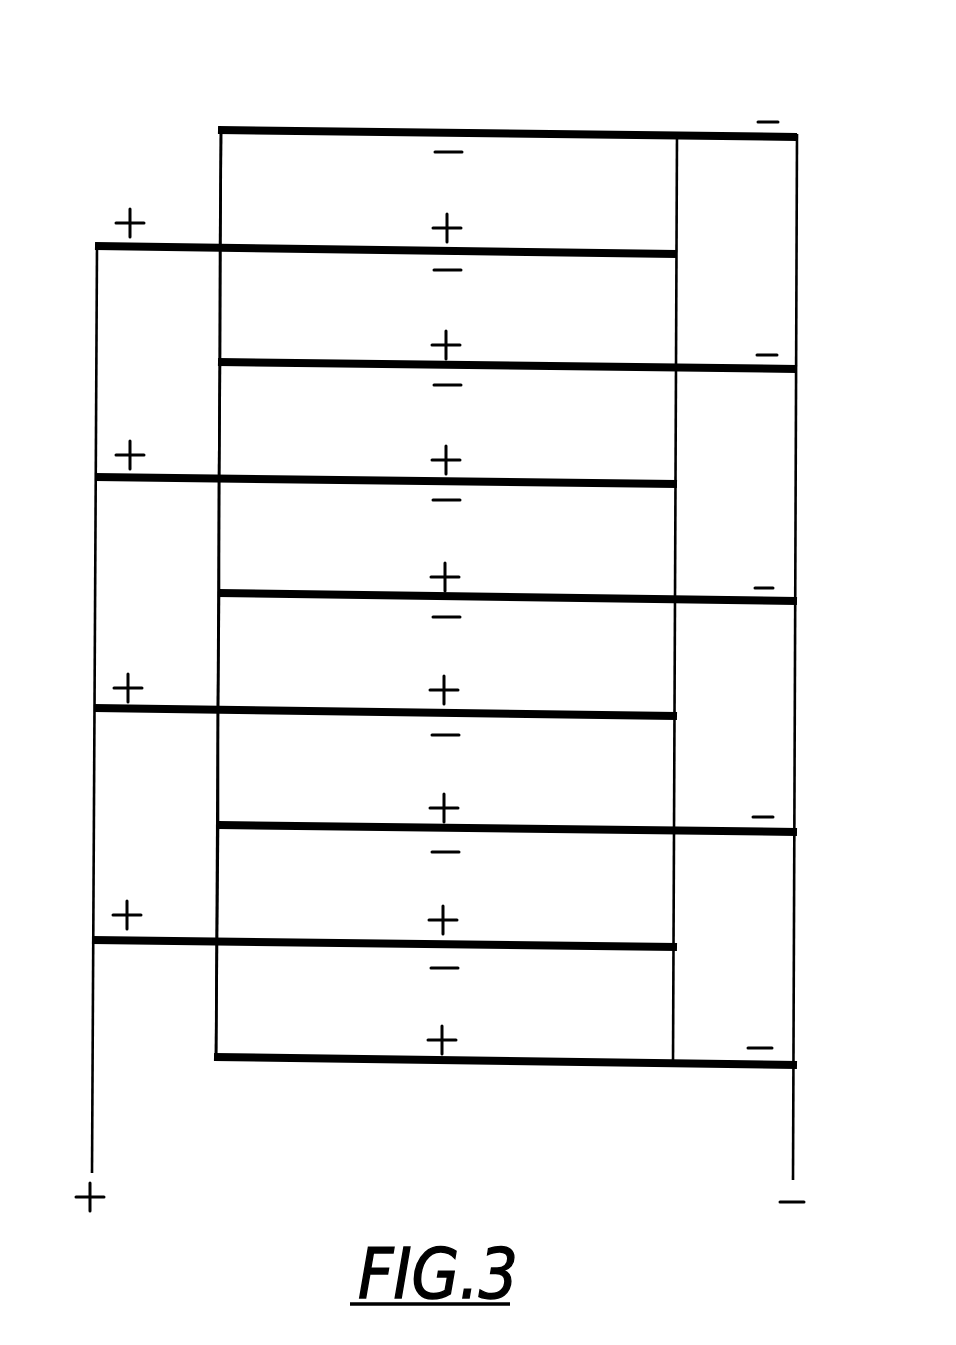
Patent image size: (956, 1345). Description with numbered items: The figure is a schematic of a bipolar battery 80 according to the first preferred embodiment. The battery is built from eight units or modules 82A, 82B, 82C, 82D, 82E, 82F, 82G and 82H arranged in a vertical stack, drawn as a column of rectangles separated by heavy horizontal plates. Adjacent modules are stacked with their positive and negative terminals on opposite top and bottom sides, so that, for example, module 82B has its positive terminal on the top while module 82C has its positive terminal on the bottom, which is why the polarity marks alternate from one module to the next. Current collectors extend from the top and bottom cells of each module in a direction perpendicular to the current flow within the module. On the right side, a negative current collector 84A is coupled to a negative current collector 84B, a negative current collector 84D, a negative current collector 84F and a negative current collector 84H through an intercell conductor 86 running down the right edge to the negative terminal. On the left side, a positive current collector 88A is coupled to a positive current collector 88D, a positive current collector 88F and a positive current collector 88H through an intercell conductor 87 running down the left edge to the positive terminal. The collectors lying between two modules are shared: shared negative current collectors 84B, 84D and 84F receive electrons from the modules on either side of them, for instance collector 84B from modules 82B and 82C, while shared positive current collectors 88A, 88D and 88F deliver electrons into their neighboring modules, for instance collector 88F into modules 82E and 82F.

The bipolar battery 80 is at (336, 46).
The module 82A is at (680, 190).
The module 82B is at (680, 292).
The module 82C is at (680, 422).
The module 82D is at (680, 520).
The module 82E is at (680, 652).
The module 82F is at (680, 752).
The module 82G is at (680, 875).
The module 82H is at (680, 979).
The negative current collector 84A is at (721, 130).
The shared negative current collector 84B is at (717, 365).
The shared negative current collector 84D is at (717, 597).
The shared negative current collector 84F is at (714, 826).
The negative current collector 84H is at (710, 1059).
The intercell conductor 86 is at (800, 622).
The intercell conductor 87 is at (95, 610).
The shared positive current collector 88A is at (158, 251).
The shared positive current collector 88D is at (162, 483).
The shared positive current collector 88F is at (160, 714).
The positive current collector 88H is at (152, 947).